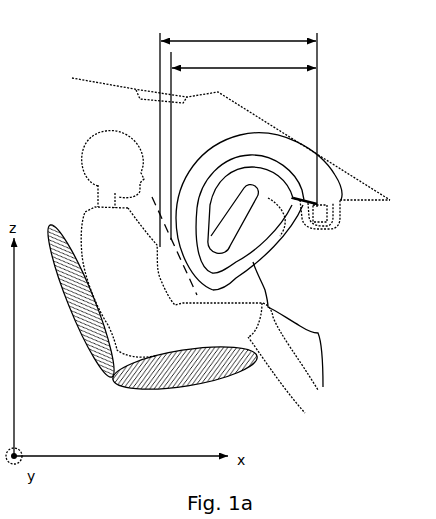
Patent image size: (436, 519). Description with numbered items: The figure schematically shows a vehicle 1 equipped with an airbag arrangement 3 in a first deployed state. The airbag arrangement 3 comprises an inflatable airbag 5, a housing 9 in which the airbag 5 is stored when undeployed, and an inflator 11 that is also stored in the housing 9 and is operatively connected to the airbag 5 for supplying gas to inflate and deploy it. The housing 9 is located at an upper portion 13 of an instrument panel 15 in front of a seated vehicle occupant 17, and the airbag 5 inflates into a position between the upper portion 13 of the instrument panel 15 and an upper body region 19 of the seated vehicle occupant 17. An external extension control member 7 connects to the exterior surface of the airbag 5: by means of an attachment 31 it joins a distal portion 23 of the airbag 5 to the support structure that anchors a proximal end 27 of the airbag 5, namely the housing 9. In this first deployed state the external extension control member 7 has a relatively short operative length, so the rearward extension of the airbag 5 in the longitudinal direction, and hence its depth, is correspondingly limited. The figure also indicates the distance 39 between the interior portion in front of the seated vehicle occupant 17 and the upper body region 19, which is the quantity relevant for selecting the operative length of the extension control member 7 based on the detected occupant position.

The vehicle 1 is at (107, 84).
The airbag arrangement 3 is at (334, 179).
The airbag 5 is at (220, 156).
The external extension control member 7 is at (328, 236).
The housing 9 is at (338, 230).
The inflator 11 is at (323, 208).
The upper portion 13 is at (352, 213).
The instrument panel 15 is at (268, 290).
The seated vehicle occupant 17 is at (63, 403).
The upper body region 19 is at (166, 266).
The distal portion 23 is at (281, 170).
The proximal end 27 is at (322, 206).
The attachment 31 is at (274, 220).
The distance 39 is at (238, 133).